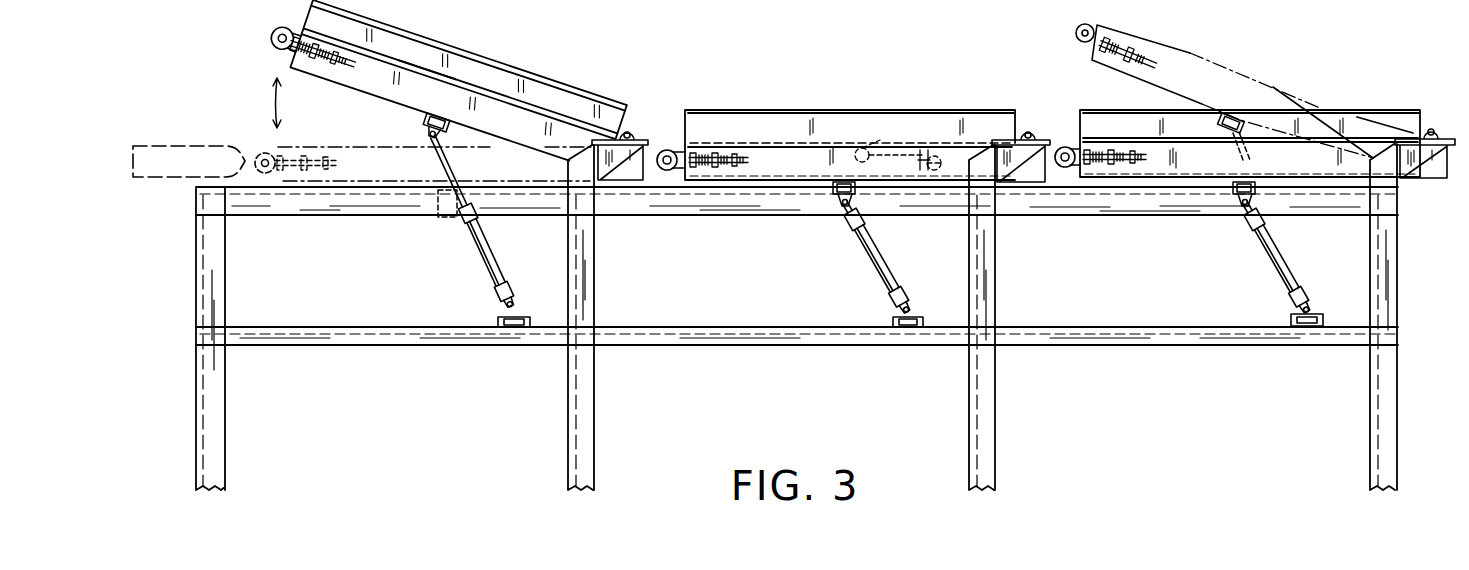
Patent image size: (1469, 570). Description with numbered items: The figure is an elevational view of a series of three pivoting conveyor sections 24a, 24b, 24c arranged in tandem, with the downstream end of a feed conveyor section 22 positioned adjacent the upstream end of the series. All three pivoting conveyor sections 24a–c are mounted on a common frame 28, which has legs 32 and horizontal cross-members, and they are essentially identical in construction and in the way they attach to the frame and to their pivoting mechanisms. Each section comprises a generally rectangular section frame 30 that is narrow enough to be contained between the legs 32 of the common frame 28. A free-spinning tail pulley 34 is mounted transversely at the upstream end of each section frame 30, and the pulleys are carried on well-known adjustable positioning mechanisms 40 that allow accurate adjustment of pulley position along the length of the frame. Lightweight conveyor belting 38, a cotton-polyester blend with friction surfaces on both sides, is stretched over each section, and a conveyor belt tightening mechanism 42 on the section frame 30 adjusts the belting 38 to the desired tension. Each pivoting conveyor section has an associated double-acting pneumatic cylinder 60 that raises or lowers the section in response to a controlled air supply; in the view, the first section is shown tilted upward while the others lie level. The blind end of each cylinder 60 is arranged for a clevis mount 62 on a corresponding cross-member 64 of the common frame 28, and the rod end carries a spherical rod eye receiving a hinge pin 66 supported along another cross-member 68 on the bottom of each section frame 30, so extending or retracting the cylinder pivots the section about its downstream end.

The feed conveyor section 22 is at (200, 143).
The pivoting conveyor section 24a is at (488, 78).
The pivoting conveyor section 24b is at (820, 143).
The pivoting conveyor section 24c is at (1337, 138).
The common frame 28 is at (357, 217).
The section frame 30 is at (423, 97).
The legs 32 is at (218, 412).
The tail pulley 34 is at (270, 42).
The conveyor belting 38 is at (385, 148).
The adjustable positioning mechanism 40 is at (323, 50).
The conveyor belt tightening mechanism 42 is at (934, 155).
The pneumatic cylinder 60 is at (506, 262).
The clevis mount 62 is at (520, 300).
The cross-member 64 is at (531, 322).
The hinge pin 66 is at (433, 146).
The cross-member 68 is at (447, 130).